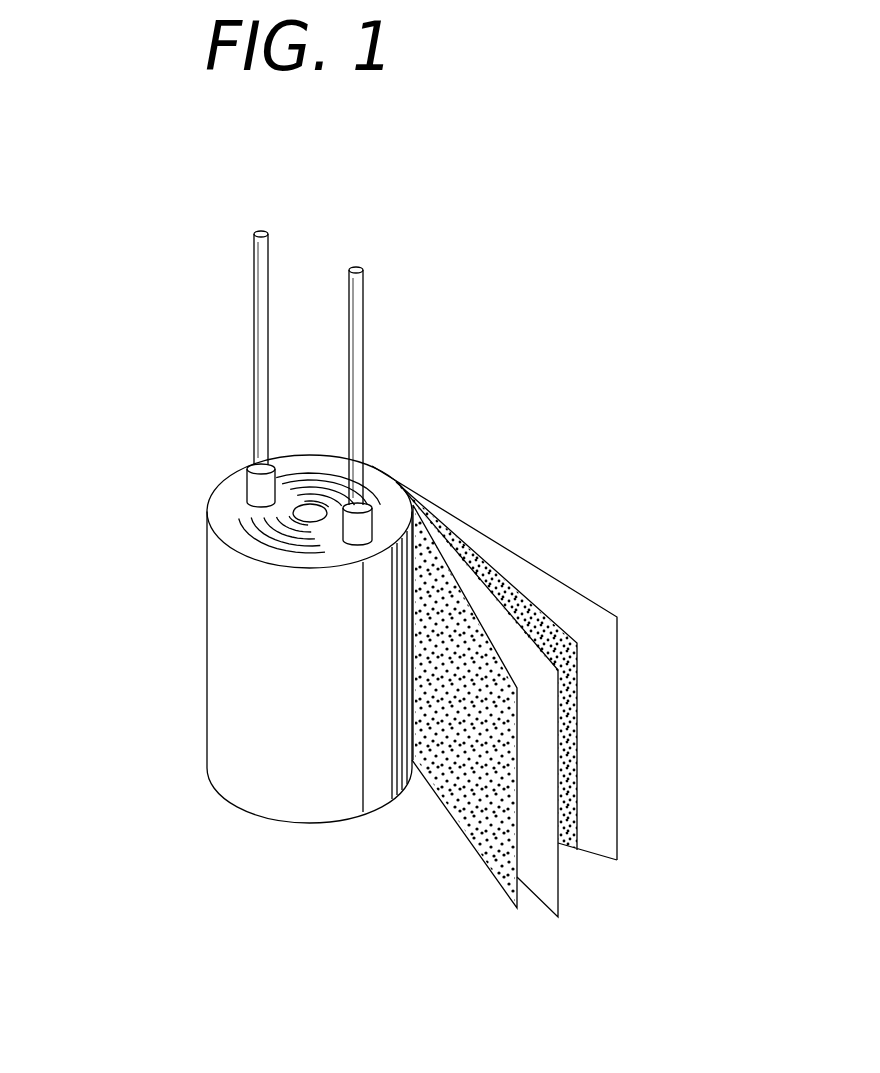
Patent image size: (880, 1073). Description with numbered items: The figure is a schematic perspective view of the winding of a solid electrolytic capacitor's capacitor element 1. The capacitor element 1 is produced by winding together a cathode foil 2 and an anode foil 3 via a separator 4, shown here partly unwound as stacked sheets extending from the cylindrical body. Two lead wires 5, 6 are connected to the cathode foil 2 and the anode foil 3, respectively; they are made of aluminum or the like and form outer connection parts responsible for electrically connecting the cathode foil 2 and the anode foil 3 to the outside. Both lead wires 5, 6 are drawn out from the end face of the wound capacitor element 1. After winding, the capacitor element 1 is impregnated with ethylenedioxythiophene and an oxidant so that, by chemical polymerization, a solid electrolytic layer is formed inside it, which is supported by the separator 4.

The capacitor element 1 is at (225, 648).
The cathode foil 2 is at (456, 808).
The anode foil 3 is at (572, 815).
The separator 4 is at (603, 950).
The lead wire 5 is at (260, 400).
The lead wire 6 is at (355, 417).